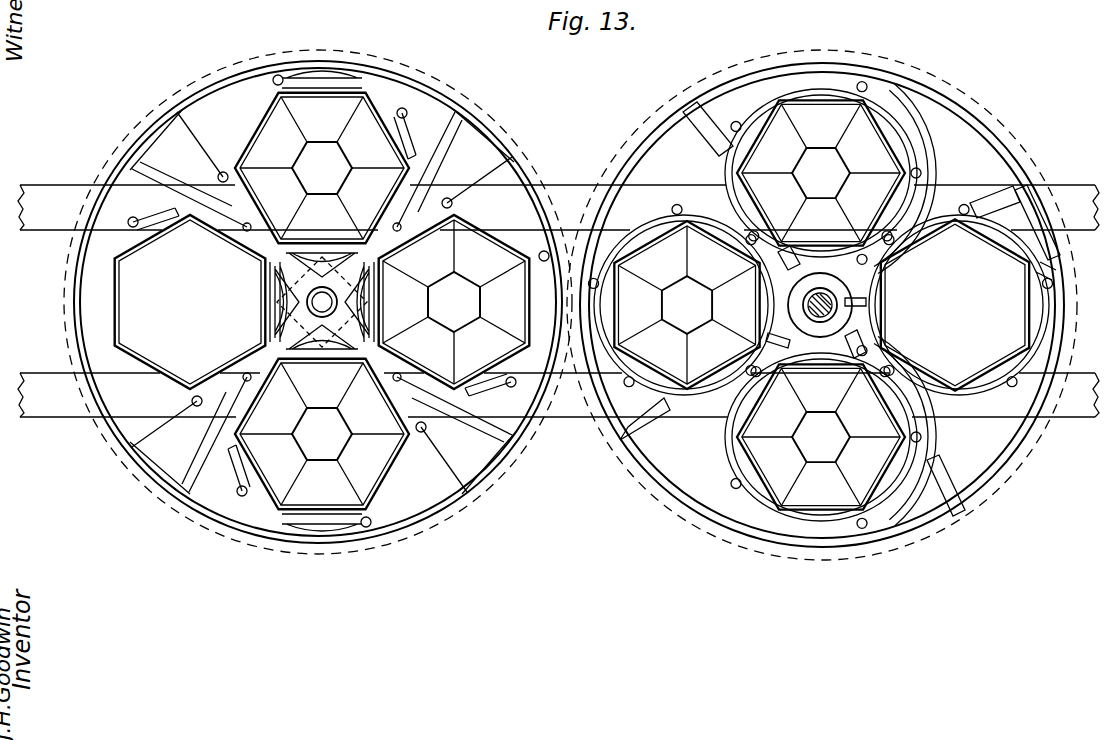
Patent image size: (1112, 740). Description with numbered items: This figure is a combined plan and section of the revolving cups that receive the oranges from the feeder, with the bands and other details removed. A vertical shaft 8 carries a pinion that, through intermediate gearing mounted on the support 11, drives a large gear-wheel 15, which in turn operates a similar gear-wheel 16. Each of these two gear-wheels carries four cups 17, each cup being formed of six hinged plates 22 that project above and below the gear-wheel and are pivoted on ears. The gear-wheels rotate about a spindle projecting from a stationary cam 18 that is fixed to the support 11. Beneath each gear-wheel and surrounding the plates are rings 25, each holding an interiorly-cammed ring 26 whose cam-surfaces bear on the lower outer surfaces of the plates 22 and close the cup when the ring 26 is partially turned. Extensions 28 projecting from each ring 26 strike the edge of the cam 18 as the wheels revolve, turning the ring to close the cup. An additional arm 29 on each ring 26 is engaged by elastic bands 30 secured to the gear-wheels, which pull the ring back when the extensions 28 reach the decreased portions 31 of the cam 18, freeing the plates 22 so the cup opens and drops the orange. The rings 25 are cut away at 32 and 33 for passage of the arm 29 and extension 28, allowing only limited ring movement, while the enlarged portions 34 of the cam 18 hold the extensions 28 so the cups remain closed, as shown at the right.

The vertical shaft 8 is at (331, 311).
The support 11 is at (572, 204).
The large gear-wheel 15 is at (667, 108).
The gear-wheel 16 is at (507, 150).
The cups 17 is at (570, 301).
The cam 18 is at (820, 301).
The hinged plates 22 is at (928, 247).
The rings 25 is at (722, 445).
The interiorly-cammed ring 26 is at (920, 450).
The extensions 28 is at (811, 304).
The arm 29 is at (1045, 252).
The elastic bands 30 is at (1025, 215).
The decreased portions 31 is at (856, 285).
The cut-away portion 32 is at (1048, 278).
The cut-away portion 33 is at (778, 302).
The enlarged portions 34 is at (782, 310).